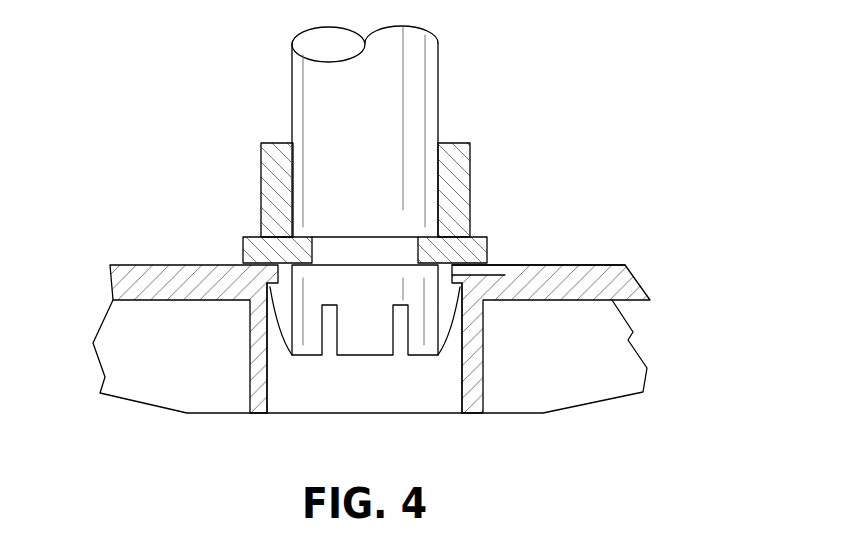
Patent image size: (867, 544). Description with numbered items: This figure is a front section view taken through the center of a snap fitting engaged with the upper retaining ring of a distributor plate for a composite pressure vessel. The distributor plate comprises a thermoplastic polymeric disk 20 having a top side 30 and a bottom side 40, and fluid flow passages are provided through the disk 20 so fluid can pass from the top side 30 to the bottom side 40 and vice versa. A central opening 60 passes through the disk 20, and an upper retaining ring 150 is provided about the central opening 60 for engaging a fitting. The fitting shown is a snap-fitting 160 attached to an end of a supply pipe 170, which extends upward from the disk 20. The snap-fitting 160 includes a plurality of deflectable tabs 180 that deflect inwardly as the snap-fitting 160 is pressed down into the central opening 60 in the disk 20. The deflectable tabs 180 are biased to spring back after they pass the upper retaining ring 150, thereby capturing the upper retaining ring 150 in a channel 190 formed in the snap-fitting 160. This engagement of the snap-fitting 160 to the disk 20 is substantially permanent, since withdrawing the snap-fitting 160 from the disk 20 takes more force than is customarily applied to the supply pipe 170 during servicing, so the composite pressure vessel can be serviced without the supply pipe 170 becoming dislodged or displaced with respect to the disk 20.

The thermoplastic polymeric disk 20 is at (623, 280).
The top side 30 is at (590, 265).
The bottom side 40 is at (630, 323).
The central opening 60 is at (463, 393).
The upper retaining ring 150 is at (270, 295).
The snap-fitting 160 is at (182, 225).
The supply pipe 170 is at (438, 73).
The deflectable tabs 180 is at (452, 327).
The channel 190 is at (505, 275).